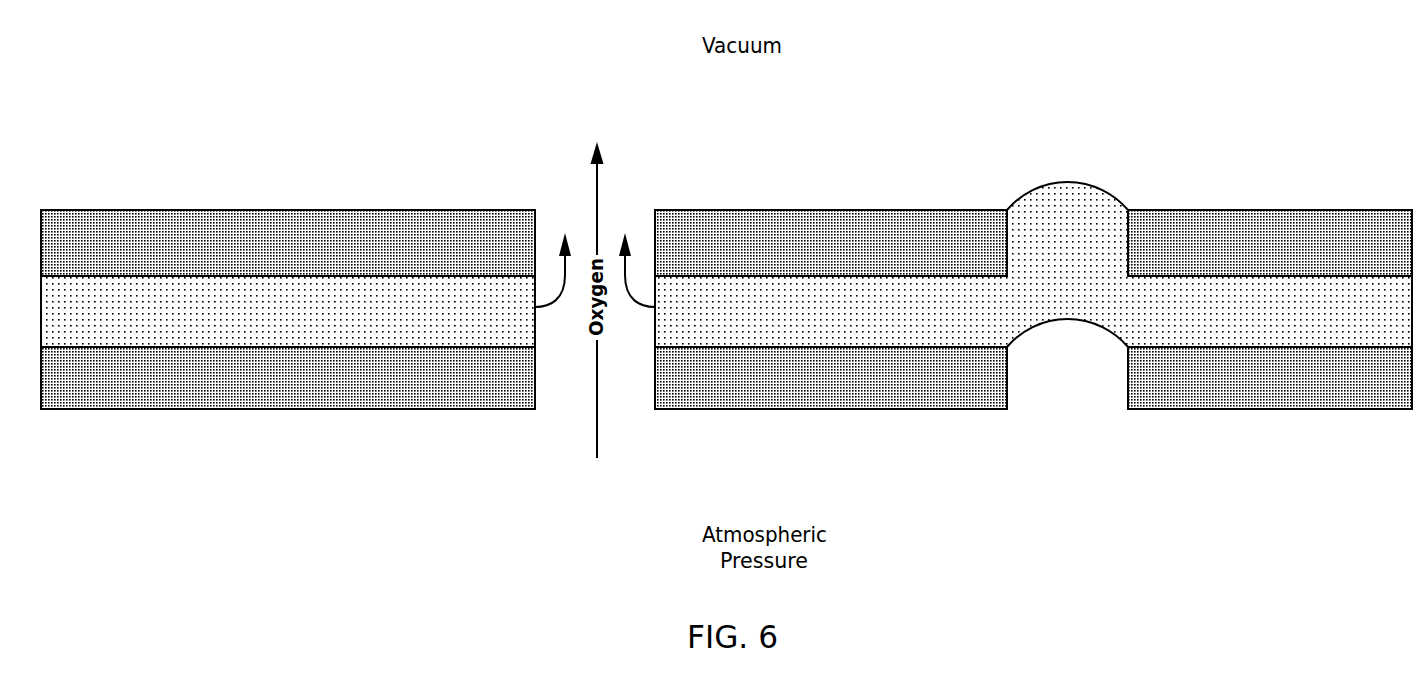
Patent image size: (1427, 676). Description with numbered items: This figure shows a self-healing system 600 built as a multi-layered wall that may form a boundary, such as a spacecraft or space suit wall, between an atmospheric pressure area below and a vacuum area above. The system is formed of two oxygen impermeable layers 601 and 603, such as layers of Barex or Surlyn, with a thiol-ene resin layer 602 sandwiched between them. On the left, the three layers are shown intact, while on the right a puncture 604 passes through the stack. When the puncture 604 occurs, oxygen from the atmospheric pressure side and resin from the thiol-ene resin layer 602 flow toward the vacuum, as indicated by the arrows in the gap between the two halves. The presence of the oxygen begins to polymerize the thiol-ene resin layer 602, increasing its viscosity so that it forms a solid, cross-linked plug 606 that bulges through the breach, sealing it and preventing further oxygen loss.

The self-healing system 600 is at (726, 224).
The oxygen impermeable layer 601 is at (103, 250).
The thiol-ene resin layer 602 is at (103, 315).
The oxygen impermeable layer 603 is at (103, 385).
The puncture 604 is at (288, 231).
The cross-linked plug 606 is at (1136, 143).